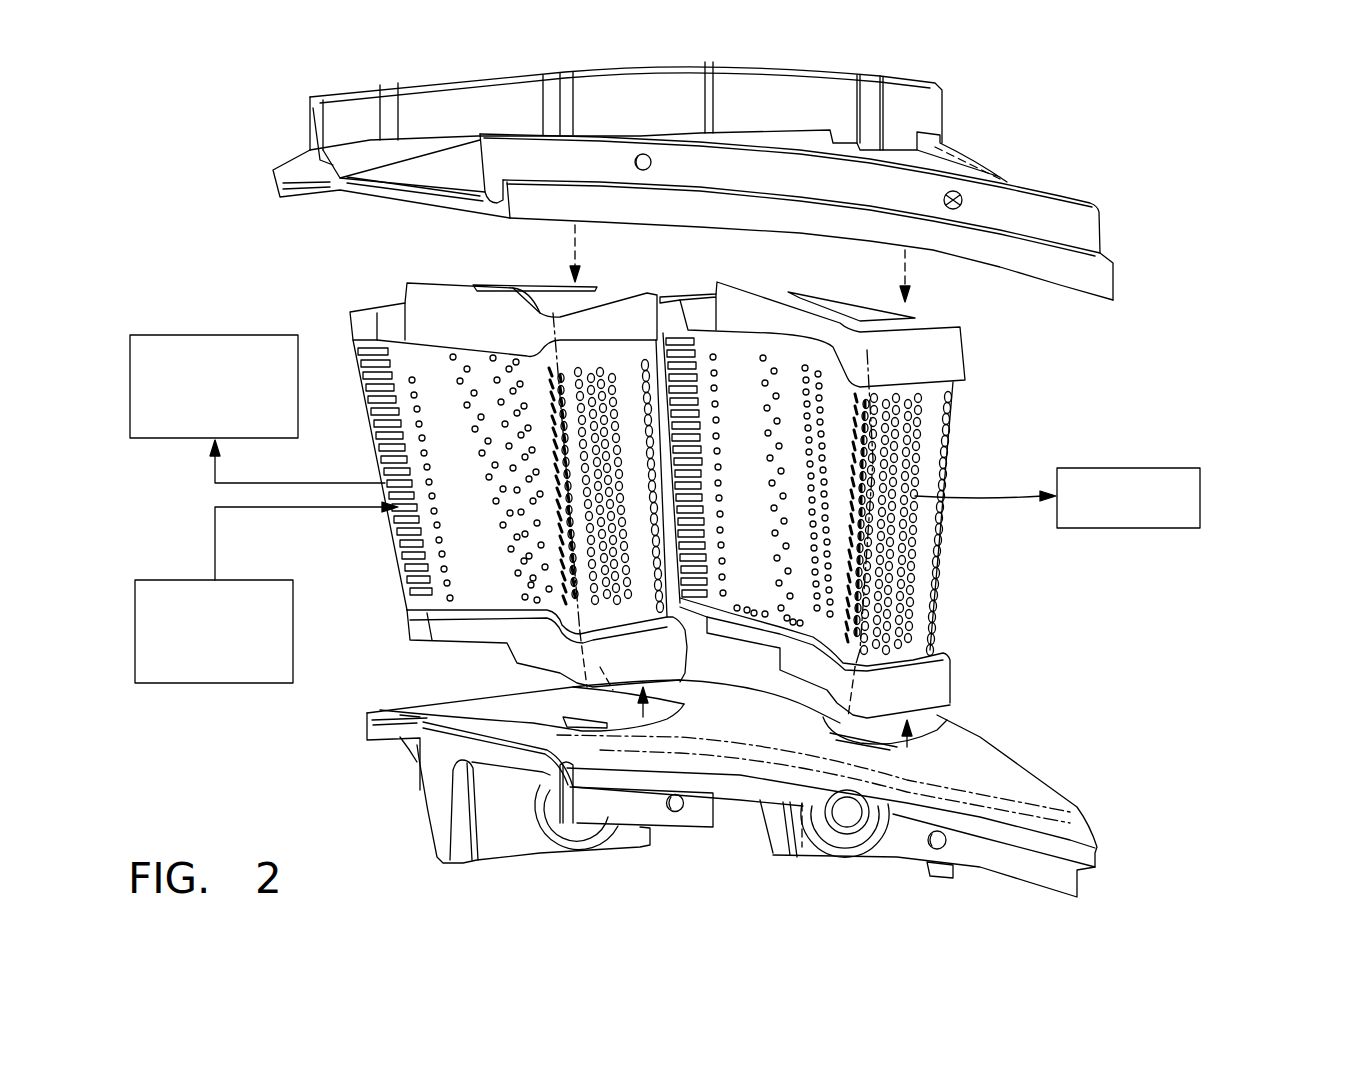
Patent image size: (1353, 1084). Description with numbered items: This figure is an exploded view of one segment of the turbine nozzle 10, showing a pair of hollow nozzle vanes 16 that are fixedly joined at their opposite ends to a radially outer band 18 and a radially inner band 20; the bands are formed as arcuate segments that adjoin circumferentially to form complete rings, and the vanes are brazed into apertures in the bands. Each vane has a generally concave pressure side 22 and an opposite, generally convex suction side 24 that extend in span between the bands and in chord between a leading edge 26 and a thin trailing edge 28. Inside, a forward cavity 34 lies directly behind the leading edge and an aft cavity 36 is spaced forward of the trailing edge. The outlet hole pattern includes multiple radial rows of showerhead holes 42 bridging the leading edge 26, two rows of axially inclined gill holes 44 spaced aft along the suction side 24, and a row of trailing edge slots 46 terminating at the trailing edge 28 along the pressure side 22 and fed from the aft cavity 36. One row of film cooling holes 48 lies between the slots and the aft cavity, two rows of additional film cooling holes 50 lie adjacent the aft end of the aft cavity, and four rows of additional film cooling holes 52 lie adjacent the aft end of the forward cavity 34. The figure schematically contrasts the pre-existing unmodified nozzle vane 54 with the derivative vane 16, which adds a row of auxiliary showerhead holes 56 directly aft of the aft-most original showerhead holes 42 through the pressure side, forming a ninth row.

The turbine nozzle 10 is at (1183, 260).
The nozzle vane 16 is at (230, 580).
The outer band 18 is at (977, 167).
The inner band 20 is at (1090, 827).
The pressure side 22 is at (762, 480).
The suction side 24 is at (917, 600).
The leading edge 26 is at (873, 390).
The trailing edge 28 is at (660, 377).
The forward cavity 34 is at (653, 703).
The aft cavity 36 is at (533, 280).
The showerhead holes 42 is at (883, 643).
The gill holes 44 is at (957, 430).
The trailing edge slots 46 is at (417, 570).
The film cooling holes 48 is at (407, 367).
The additional film cooling holes 50 is at (477, 400).
The additional film cooling holes 52 is at (530, 597).
The pre-existing unmodified nozzle vane 54 is at (227, 333).
The auxiliary showerhead holes 56 is at (840, 617).